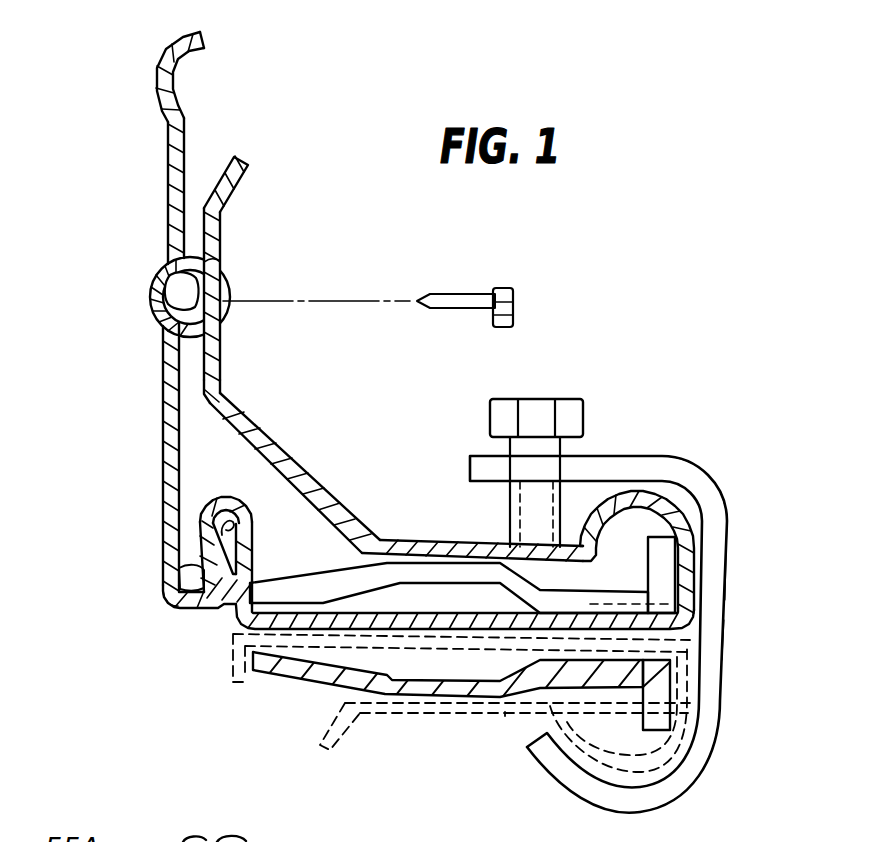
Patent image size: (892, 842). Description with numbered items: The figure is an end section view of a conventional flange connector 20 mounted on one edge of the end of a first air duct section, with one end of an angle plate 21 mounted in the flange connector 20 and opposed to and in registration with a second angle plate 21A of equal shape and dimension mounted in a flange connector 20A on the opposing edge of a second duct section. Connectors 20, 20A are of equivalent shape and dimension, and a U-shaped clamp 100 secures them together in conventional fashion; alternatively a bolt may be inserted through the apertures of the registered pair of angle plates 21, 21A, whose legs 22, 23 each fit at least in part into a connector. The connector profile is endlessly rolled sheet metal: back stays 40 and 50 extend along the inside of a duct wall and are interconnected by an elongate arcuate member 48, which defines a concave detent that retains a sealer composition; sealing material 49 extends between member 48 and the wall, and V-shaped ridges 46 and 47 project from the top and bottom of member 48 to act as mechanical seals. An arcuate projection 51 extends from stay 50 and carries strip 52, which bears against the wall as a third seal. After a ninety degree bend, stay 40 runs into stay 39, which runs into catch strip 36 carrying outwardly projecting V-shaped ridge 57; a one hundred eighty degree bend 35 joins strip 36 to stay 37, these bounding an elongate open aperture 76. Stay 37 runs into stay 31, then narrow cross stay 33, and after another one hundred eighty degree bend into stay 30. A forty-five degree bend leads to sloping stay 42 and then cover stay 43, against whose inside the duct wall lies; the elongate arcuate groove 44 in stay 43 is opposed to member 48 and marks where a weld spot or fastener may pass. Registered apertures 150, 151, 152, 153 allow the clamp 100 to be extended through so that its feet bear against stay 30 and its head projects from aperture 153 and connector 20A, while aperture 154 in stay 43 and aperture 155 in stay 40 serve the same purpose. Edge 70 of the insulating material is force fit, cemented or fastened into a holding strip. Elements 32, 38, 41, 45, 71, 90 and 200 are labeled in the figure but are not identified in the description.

The flange connector 20 is at (353, 422).
The flange connector 20A is at (480, 725).
The angle plate 21 is at (606, 586).
The second angle plate 21A is at (637, 723).
The leg 22 is at (540, 598).
The leg 23 is at (520, 666).
The stay 30 is at (470, 540).
The stay 31 is at (693, 643).
The top wall of clamp 32 is at (690, 500).
The narrow cross stay 33 is at (700, 570).
The one hundred eighty degree bend 35 is at (200, 533).
The catch strip 36 is at (197, 531).
The stay 37 is at (225, 608).
The lower corner 38 is at (162, 583).
The stay 39 is at (172, 608).
The back stay 40 is at (162, 448).
The tab 41 is at (179, 567).
The sloping stay 42 is at (301, 470).
The cover stay 43 is at (223, 383).
The elongate arcuate groove 44 is at (223, 284).
The angled end portion 45 is at (240, 184).
The V-shaped ridge 46 is at (222, 320).
The V-shaped ridge 47 is at (215, 272).
The elongate arcuate member 48 is at (158, 320).
The sealing material 49 is at (176, 262).
The back stay 50 is at (168, 180).
The arcuate projection 51 is at (158, 75).
The strip 52 is at (208, 42).
The V-shaped outwardly projecting ridge 57 is at (253, 546).
The edge 70 is at (648, 545).
The hook portion of clamp 71 is at (658, 697).
The elongate open aperture 76 is at (226, 527).
The screw 90 is at (504, 288).
The U-shaped clamp 100 is at (736, 485).
The aperture 150 is at (494, 546).
The aperture 151 is at (720, 593).
The aperture 152 is at (722, 637).
The aperture 153 is at (505, 712).
The aperture 154 is at (227, 390).
The aperture 155 is at (152, 390).
The assembly 200 is at (735, 440).